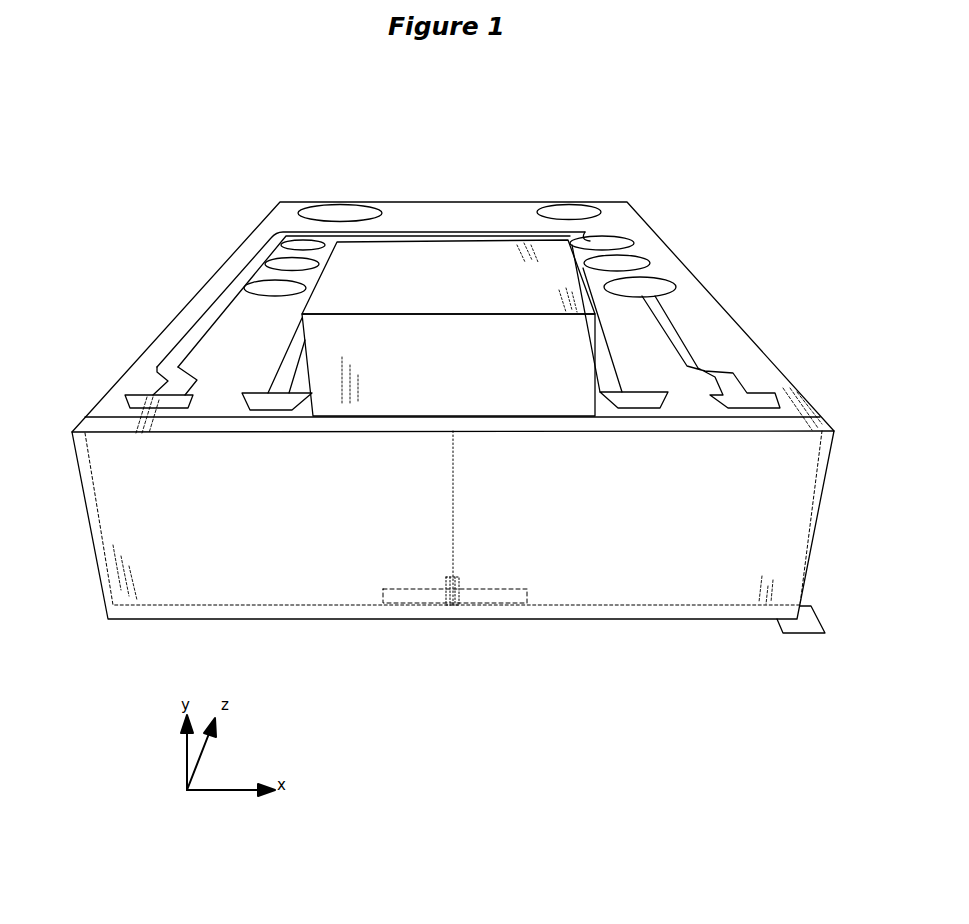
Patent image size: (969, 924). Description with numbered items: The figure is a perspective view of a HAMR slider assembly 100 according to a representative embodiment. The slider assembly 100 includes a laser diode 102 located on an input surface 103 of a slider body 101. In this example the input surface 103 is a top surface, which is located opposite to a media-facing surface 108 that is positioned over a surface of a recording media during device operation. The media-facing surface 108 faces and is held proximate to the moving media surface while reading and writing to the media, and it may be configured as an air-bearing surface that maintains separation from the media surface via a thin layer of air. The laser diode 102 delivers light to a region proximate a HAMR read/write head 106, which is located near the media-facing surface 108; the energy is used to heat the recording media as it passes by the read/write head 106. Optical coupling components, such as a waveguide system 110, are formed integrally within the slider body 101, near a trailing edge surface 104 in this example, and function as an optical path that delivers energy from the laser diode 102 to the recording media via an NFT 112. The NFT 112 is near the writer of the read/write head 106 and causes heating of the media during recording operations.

The HAMR slider assembly 100 is at (642, 143).
The slider body 101 is at (253, 232).
The laser diode 102 is at (410, 250).
The input surface 103 is at (137, 377).
The trailing edge surface 104 is at (168, 595).
The HAMR read/write head 106 is at (458, 605).
The media-facing surface 108 is at (815, 637).
The waveguide system 110 is at (452, 500).
The NFT 112 is at (452, 607).